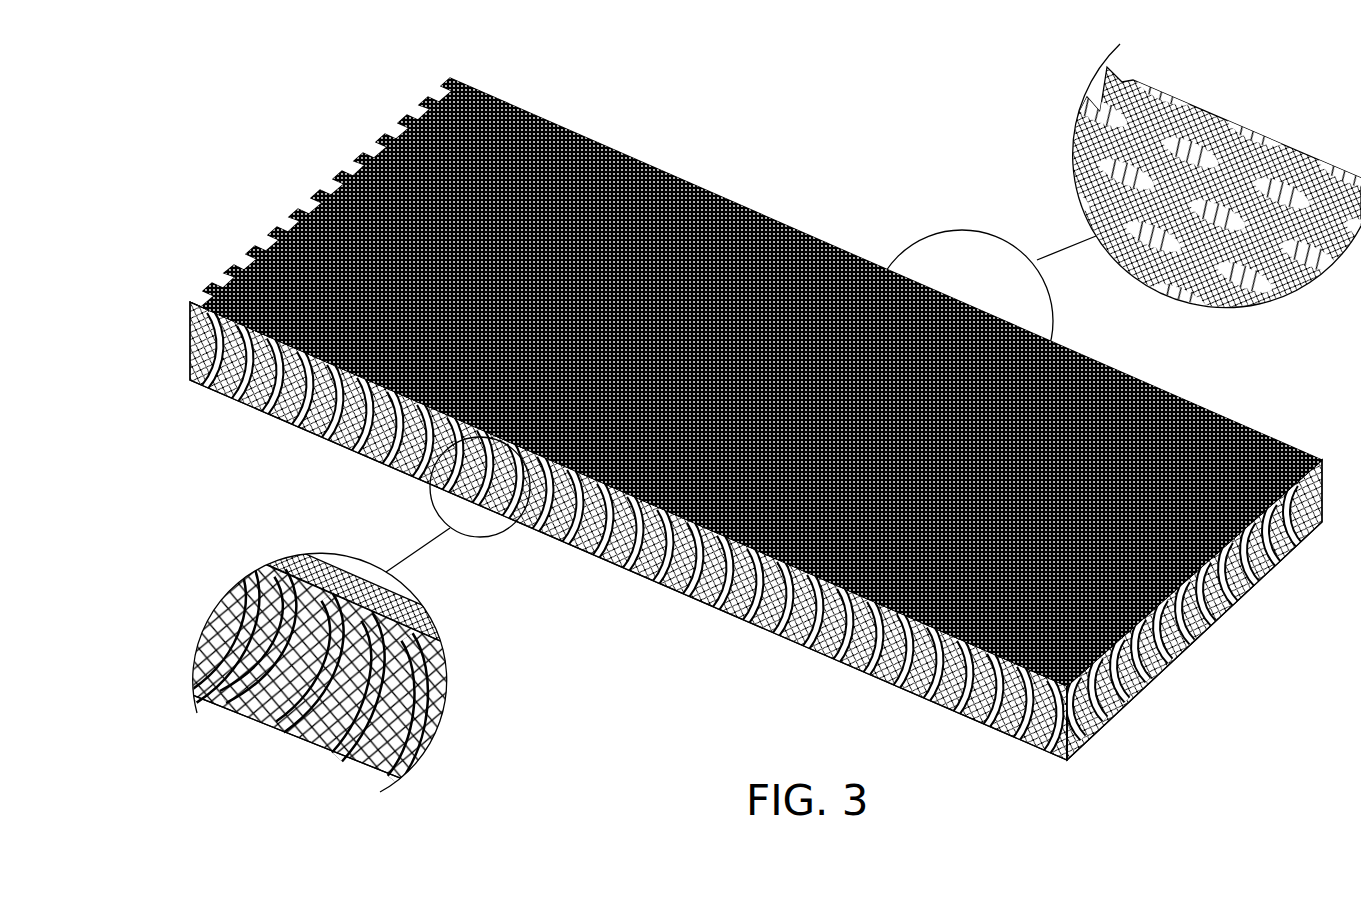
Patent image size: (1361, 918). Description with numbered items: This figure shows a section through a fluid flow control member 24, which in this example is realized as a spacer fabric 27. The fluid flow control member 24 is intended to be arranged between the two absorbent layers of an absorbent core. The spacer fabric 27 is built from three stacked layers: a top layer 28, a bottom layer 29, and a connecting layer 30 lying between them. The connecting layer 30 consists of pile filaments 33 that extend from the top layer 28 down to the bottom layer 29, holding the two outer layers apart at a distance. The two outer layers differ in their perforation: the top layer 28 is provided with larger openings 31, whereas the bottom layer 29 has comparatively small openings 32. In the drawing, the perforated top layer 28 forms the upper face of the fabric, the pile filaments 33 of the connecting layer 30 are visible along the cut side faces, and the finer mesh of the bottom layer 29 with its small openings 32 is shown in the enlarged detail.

The fluid flow control member 24 is at (755, 435).
The spacer fabric 27 is at (755, 435).
The top layer 28 is at (327, 174).
The bottom layer 29 is at (716, 624).
The connecting layer 30 is at (792, 630).
The openings 31 is at (694, 190).
The small openings 32 is at (263, 710).
The pile filaments 33 is at (443, 697).